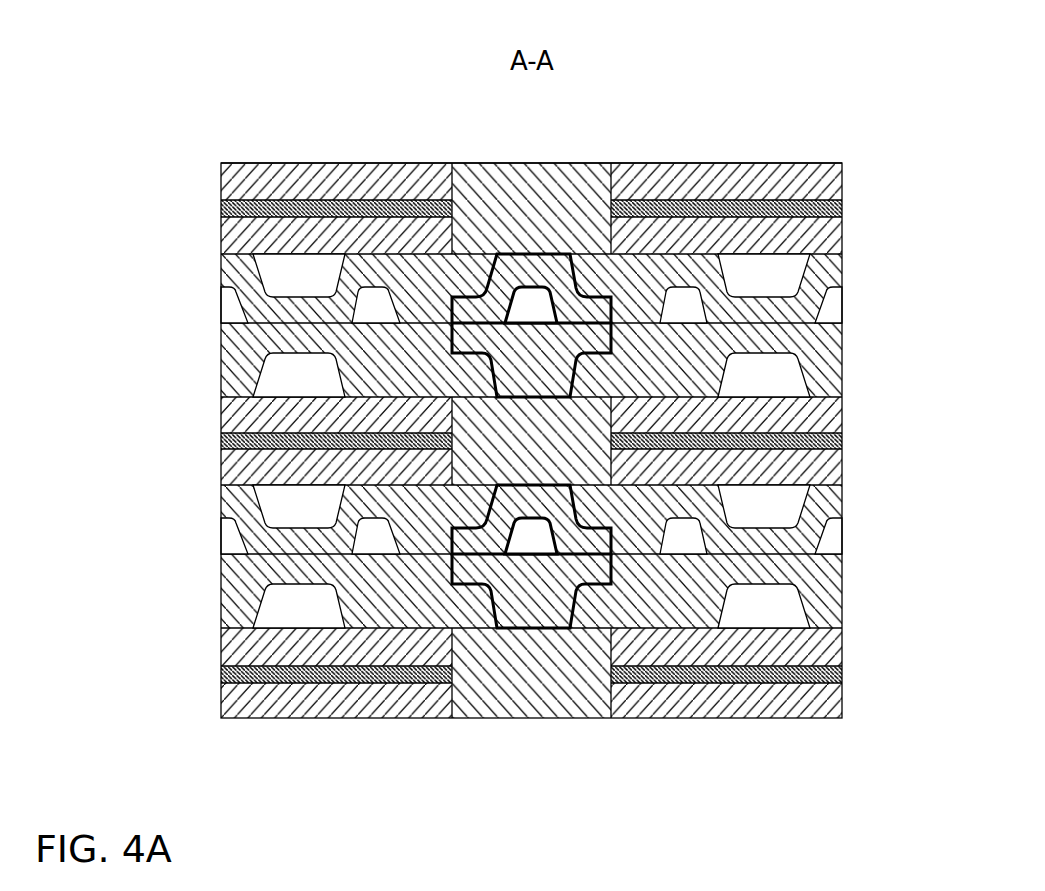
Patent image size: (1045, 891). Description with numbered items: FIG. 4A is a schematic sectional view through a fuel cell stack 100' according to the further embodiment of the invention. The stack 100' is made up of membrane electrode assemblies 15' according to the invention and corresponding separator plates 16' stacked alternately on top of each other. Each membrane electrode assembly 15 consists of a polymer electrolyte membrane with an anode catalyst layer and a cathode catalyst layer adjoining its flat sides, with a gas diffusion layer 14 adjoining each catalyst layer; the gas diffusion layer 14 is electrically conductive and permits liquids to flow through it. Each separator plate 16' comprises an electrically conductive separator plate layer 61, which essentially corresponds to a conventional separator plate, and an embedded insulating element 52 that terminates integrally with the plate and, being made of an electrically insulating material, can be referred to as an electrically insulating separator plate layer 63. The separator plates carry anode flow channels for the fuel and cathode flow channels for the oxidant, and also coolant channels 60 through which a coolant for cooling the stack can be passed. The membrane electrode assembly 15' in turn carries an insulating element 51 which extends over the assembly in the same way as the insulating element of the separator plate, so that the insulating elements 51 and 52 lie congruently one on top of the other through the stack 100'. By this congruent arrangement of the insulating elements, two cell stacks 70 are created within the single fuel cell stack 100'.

The fuel cell stack 100' is at (527, 113).
The electrically conductive separator plate layer 61 is at (375, 365).
The insulating element 52 is at (531, 364).
The electrically insulating separator plate layer 63 is at (532, 364).
The insulating element 51 is at (585, 197).
The coolant channels 60 is at (685, 306).
The gas diffusion layer 14 is at (234, 415).
The membrane electrode assembly 15 is at (564, 440).
The membrane electrode assembly 15' is at (568, 441).
The separator plate 16' is at (494, 441).
The cell stacks 70 is at (193, 737).